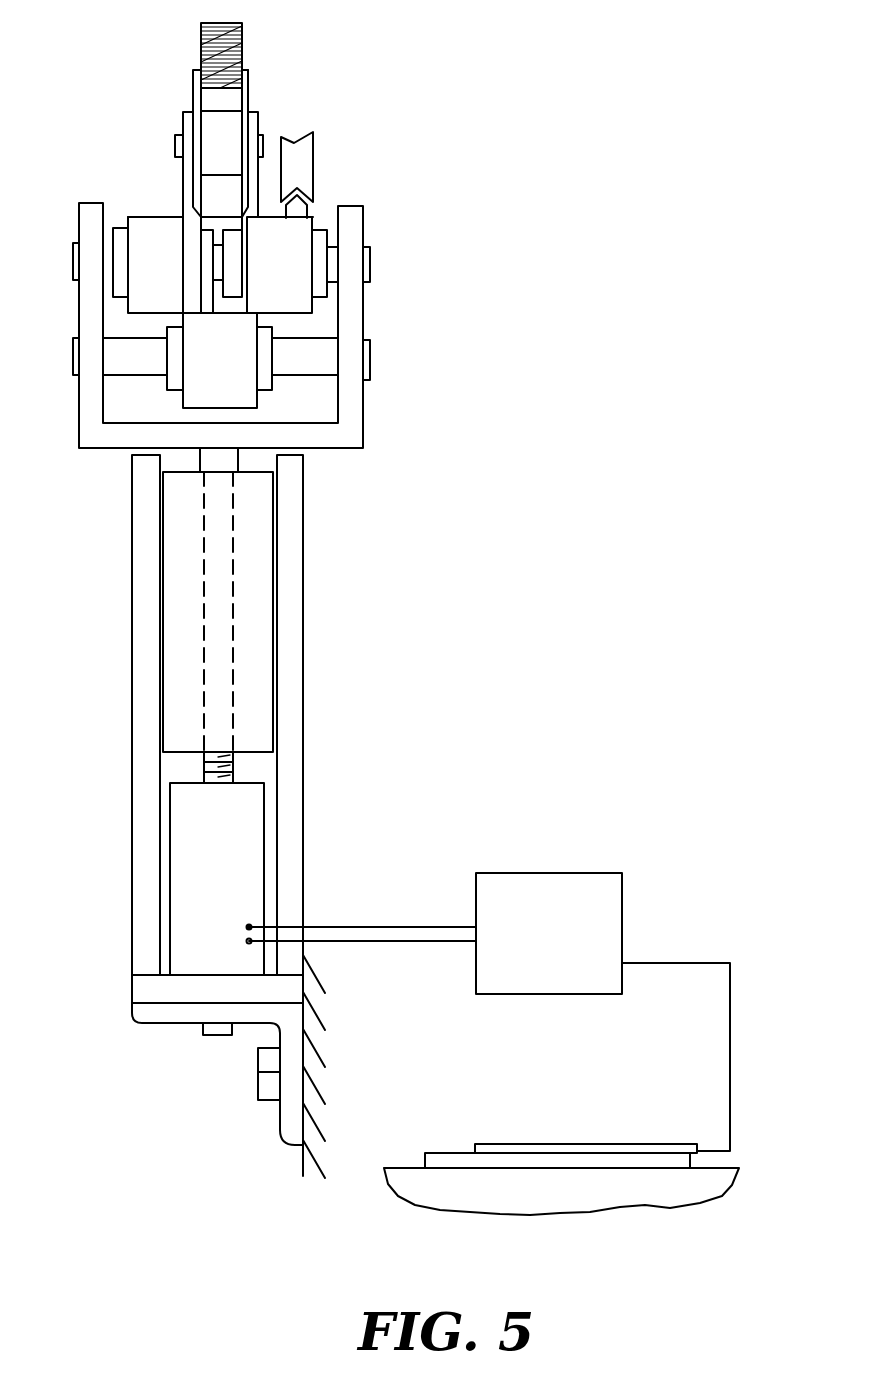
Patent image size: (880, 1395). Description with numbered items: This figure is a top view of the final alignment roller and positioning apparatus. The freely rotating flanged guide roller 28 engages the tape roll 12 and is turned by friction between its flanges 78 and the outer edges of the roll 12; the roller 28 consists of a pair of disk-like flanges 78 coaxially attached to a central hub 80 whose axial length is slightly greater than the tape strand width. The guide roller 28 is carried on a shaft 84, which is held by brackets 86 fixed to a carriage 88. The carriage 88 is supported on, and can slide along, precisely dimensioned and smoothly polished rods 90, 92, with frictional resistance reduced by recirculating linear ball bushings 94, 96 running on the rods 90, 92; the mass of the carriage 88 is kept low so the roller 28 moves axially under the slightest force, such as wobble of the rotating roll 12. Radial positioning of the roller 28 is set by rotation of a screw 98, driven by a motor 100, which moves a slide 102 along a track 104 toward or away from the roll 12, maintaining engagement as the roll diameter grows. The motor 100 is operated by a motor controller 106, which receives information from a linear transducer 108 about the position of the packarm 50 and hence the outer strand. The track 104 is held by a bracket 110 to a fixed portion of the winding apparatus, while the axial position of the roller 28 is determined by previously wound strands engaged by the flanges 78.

The tape roll 12 is at (243, 34).
The flanged guide roller 28 is at (249, 80).
The flanges 78 is at (193, 88).
The central hub 80 is at (227, 132).
The shaft 84 is at (176, 143).
The brackets 86 is at (187, 173).
The carriage 88 is at (313, 220).
The rod 90 is at (370, 262).
The rod 92 is at (370, 360).
The recirculating linear ball bushing 94 is at (117, 238).
The recirculating linear ball bushing 96 is at (172, 387).
The screw 98 is at (230, 763).
The motor 100 is at (252, 845).
The slide 102 is at (257, 610).
The track 104 is at (295, 543).
The motor controller 106 is at (565, 890).
The linear transducer 108 is at (614, 1144).
The bracket 110 is at (177, 1012).
The packarm 50 is at (528, 1202).